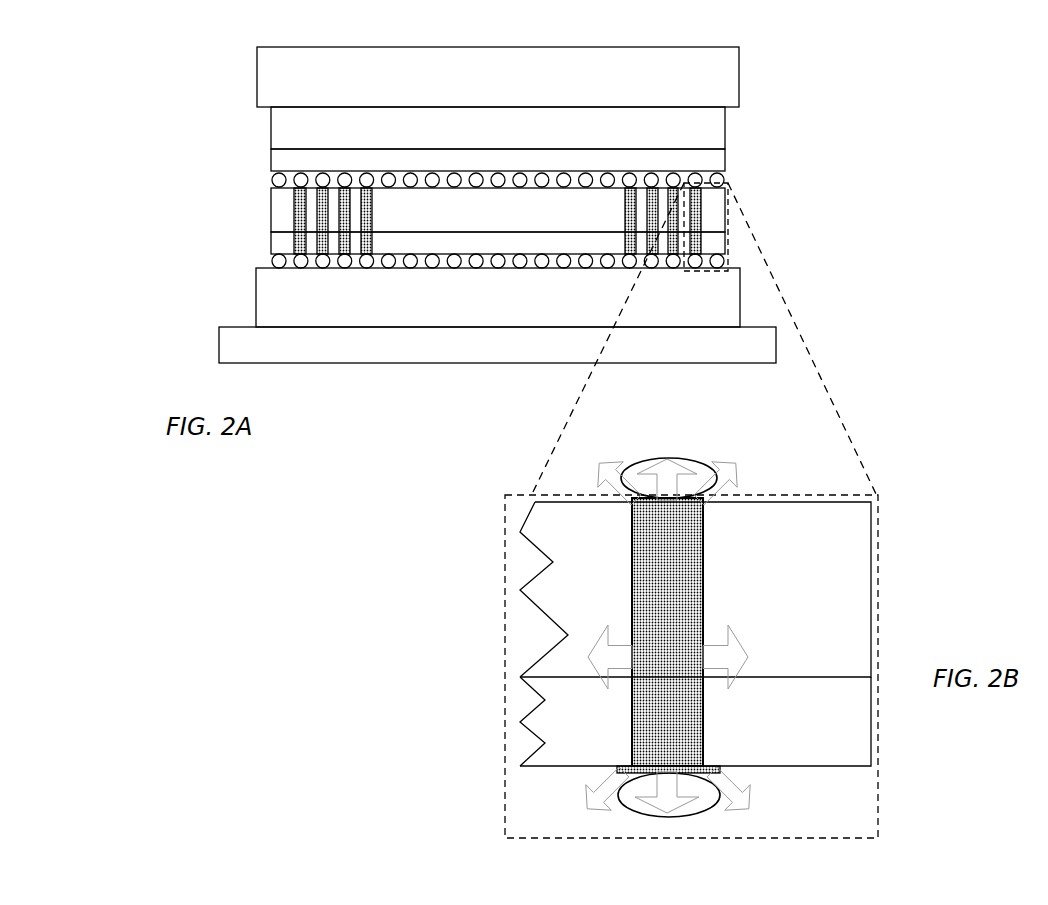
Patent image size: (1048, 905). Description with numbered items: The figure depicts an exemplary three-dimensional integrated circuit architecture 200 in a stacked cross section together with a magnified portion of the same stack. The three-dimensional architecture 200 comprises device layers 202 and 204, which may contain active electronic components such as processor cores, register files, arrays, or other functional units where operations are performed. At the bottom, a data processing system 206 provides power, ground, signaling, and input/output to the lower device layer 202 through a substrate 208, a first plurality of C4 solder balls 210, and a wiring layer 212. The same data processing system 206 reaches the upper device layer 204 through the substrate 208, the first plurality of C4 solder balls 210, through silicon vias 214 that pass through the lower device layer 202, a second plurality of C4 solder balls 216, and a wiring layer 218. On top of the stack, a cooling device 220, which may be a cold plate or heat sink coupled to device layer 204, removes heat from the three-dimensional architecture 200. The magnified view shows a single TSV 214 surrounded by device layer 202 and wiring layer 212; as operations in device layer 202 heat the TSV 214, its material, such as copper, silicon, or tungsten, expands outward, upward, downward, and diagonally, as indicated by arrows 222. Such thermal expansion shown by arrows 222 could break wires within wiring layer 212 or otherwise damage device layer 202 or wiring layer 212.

In FIG. 2A, the three-dimensional (3D) architecture 200 is at (168, 92).
In FIG. 2B, the three-dimensional (3D) architecture 200 is at (950, 508).
In FIG. 2A, the cooling device 220 is at (257, 86).
In FIG. 2A, the device layer 204 is at (271, 144).
In FIG. 2A, the wiring layer 218 is at (271, 165).
In FIG. 2A, the second plurality of C4 solder balls 216 is at (727, 178).
In FIG. 2A, the device layer 202 is at (271, 208).
In FIG. 2B, the device layer 202 is at (520, 532).
In FIG. 2A, the wiring layer 212 is at (271, 243).
In FIG. 2B, the wiring layer 212 is at (520, 722).
In FIG. 2A, the through silicon via (TSV) 214 is at (702, 212).
In FIG. 2B, the through silicon via (TSV) 214 is at (632, 612).
In FIG. 2A, the first plurality of C4 solder balls 210 is at (727, 248).
In FIG. 2A, the substrate 208 is at (256, 288).
In FIG. 2A, the data processing system 206 is at (219, 347).
In FIG. 2B, the arrows 222 is at (612, 470).